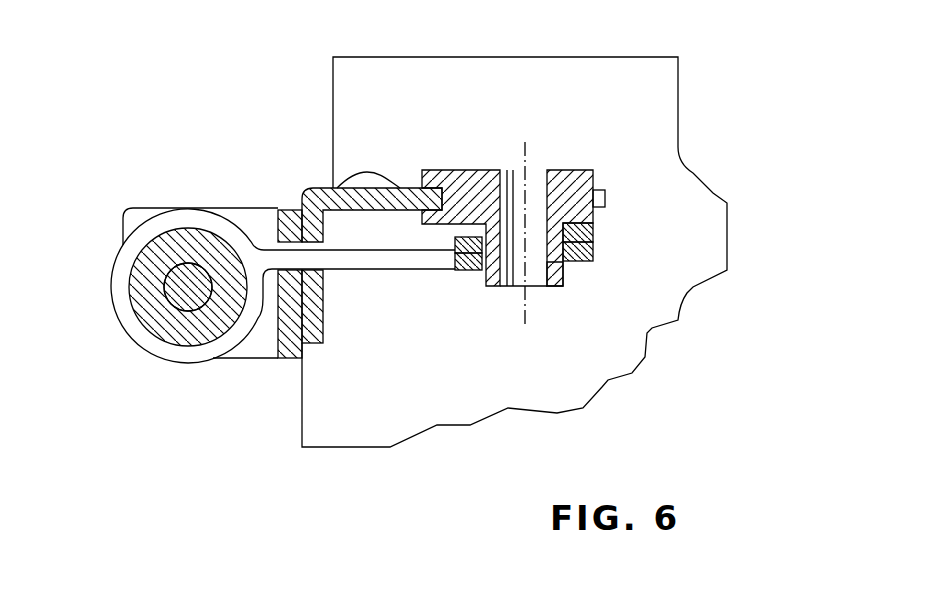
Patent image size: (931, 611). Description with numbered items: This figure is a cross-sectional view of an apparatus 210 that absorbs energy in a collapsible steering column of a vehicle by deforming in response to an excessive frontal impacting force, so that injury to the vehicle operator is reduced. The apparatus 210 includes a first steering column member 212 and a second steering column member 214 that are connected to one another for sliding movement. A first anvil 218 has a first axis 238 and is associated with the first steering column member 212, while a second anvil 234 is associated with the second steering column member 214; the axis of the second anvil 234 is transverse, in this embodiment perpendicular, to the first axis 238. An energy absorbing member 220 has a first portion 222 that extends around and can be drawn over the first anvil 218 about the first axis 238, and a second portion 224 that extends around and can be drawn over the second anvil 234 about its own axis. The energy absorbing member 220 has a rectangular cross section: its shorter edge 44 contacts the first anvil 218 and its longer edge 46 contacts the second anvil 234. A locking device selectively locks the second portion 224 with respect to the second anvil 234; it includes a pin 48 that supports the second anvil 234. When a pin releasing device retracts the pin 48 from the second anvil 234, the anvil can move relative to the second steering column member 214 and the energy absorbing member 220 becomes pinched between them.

The apparatus 210 is at (196, 468).
The first steering column member 212 is at (593, 175).
The second steering column member 214 is at (317, 198).
The first anvil 218 is at (560, 283).
The energy absorbing member 220 is at (402, 296).
The first portion 222 is at (590, 263).
The second portion 224 is at (173, 362).
The second anvil 234 is at (148, 323).
The first axis 238 is at (527, 148).
The shorter edge 44 is at (482, 240).
The longer edge 46 is at (464, 271).
The pin 48 is at (173, 270).